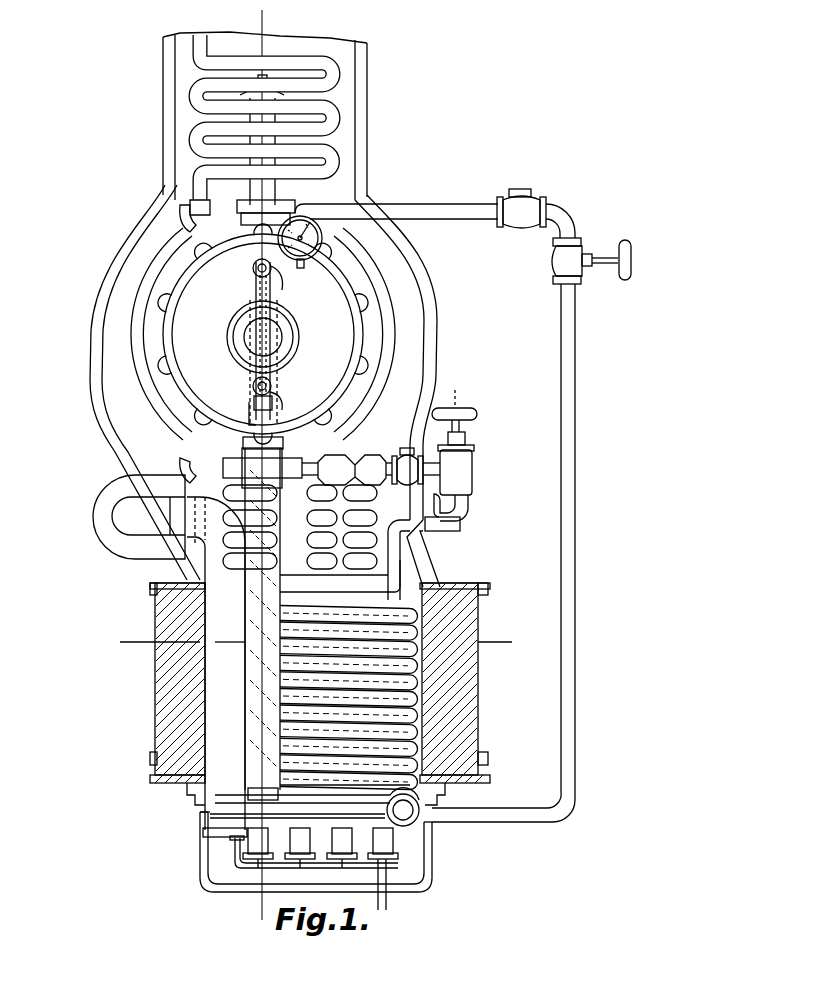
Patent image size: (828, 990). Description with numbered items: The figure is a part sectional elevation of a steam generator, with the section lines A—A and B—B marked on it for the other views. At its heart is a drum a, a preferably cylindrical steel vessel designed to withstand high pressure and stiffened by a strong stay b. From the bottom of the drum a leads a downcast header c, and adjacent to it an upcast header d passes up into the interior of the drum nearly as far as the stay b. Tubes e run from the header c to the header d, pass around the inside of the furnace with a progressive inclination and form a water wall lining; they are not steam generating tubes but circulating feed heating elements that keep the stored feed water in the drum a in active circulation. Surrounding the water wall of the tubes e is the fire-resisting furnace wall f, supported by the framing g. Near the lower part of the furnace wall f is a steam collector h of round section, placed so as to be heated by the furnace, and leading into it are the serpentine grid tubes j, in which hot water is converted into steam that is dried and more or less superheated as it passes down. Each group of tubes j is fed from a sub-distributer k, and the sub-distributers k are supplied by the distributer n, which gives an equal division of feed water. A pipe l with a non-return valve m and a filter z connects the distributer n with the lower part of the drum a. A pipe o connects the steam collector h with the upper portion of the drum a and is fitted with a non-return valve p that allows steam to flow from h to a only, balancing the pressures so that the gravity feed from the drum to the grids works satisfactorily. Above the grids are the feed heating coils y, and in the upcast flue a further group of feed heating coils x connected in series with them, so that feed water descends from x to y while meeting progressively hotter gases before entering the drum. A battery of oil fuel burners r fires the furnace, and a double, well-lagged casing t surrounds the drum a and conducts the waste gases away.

The feed heating coils x is at (335, 117).
The drum a is at (325, 388).
The stay b is at (275, 335).
The non-return valve p is at (522, 213).
The pipe o is at (576, 525).
The filter z is at (350, 462).
The pipe l is at (395, 458).
The non-return valve m is at (407, 474).
The distributer n is at (455, 467).
The casing t is at (426, 375).
The sub-distributer k is at (450, 527).
The feed heating coils y is at (350, 540).
The downcast header c is at (225, 698).
The upcast header d is at (262, 624).
The tubes e is at (413, 665).
The furnace wall f is at (465, 728).
The framing g is at (480, 790).
The steam collector h is at (400, 824).
The oil fuel burners r is at (305, 840).
The tubes j is at (352, 770).
The section line A— A is at (311, 634).
The section line B— B is at (245, 930).